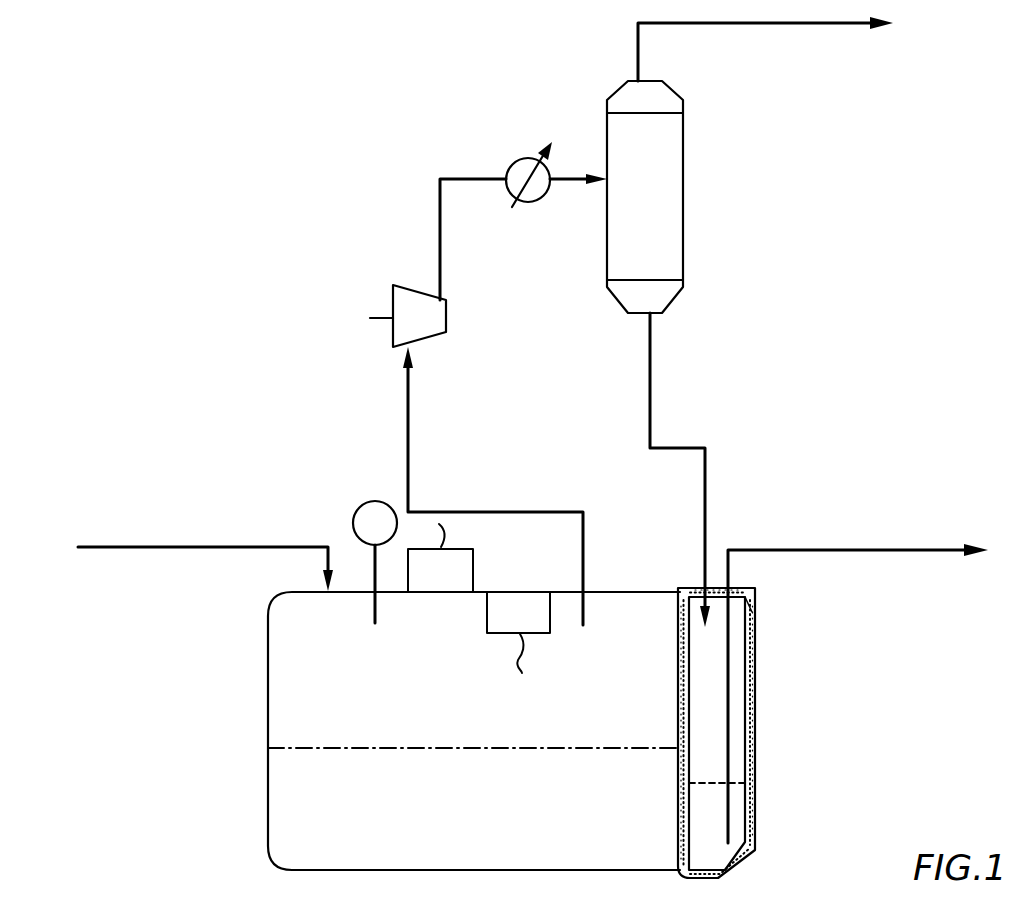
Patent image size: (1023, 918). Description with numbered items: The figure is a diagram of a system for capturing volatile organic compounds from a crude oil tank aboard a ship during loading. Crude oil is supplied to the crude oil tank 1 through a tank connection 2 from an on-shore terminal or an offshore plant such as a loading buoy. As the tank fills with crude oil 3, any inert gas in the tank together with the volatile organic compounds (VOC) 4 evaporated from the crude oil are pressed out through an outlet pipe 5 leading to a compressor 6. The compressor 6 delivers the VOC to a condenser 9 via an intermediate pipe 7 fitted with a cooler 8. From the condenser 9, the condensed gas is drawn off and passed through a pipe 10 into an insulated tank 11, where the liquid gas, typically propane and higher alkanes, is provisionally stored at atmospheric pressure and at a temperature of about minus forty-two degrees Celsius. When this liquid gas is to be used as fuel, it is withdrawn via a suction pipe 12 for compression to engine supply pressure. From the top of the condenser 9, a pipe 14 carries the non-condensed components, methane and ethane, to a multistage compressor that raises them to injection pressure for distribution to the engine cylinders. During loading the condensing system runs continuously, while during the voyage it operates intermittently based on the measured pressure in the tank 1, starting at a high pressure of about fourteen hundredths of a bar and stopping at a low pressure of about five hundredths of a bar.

The crude oil tank 1 is at (267, 637).
The tank connection 2 is at (187, 545).
The crude oil 3 is at (277, 807).
The volatile organic compounds (VOC) 4 is at (622, 612).
The outlet pipe 5 is at (410, 428).
The compressor 6 is at (413, 300).
The intermediate pipe 7 is at (440, 235).
The cooler 8 is at (527, 162).
The condenser 9 is at (672, 170).
The pipe 10 is at (708, 477).
The insulated tank 11 is at (735, 702).
The suction pipe 12 is at (848, 548).
The pipe 14 is at (793, 25).